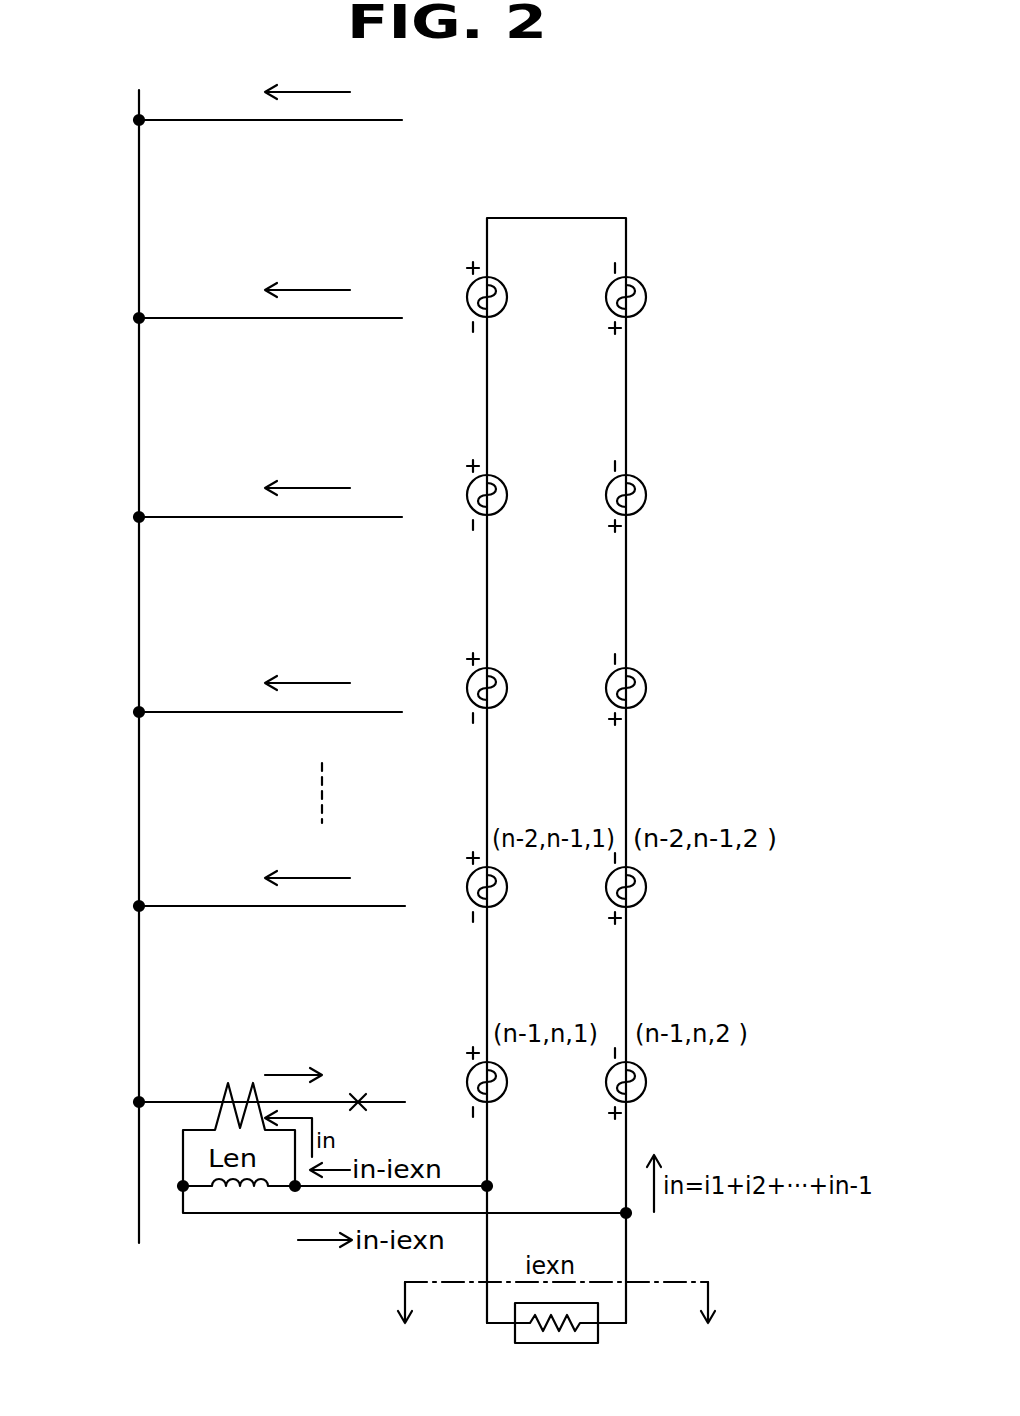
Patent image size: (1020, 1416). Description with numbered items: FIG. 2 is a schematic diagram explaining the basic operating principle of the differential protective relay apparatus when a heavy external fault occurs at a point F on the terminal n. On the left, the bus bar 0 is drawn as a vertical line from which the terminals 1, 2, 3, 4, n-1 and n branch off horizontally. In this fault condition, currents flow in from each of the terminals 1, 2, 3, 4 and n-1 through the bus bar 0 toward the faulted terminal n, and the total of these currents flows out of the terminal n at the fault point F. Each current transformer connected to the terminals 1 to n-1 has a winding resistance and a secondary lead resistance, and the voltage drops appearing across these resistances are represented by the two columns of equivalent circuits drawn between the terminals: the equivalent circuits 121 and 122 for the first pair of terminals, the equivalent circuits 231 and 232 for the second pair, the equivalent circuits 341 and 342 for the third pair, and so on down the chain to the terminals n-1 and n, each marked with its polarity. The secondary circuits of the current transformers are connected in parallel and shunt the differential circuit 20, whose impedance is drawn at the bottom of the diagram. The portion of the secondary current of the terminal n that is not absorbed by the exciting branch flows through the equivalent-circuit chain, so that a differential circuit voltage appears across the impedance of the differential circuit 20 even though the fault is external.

The bus bar 0 is at (134, 184).
The terminal 1 is at (281, 98).
The terminal 2 is at (281, 296).
The terminal 3 is at (281, 494).
The terminal 4 is at (281, 689).
The terminal n-1 is at (292, 881).
The terminal n is at (282, 1079).
The fault point F is at (357, 1086).
The differential circuit 20 is at (486, 1313).
The equivalent circuit 121 is at (521, 297).
The equivalent circuit 122 is at (665, 298).
The equivalent circuit 231 is at (522, 495).
The equivalent circuit 232 is at (665, 496).
The equivalent circuit 341 is at (522, 688).
The equivalent circuit 342 is at (663, 689).